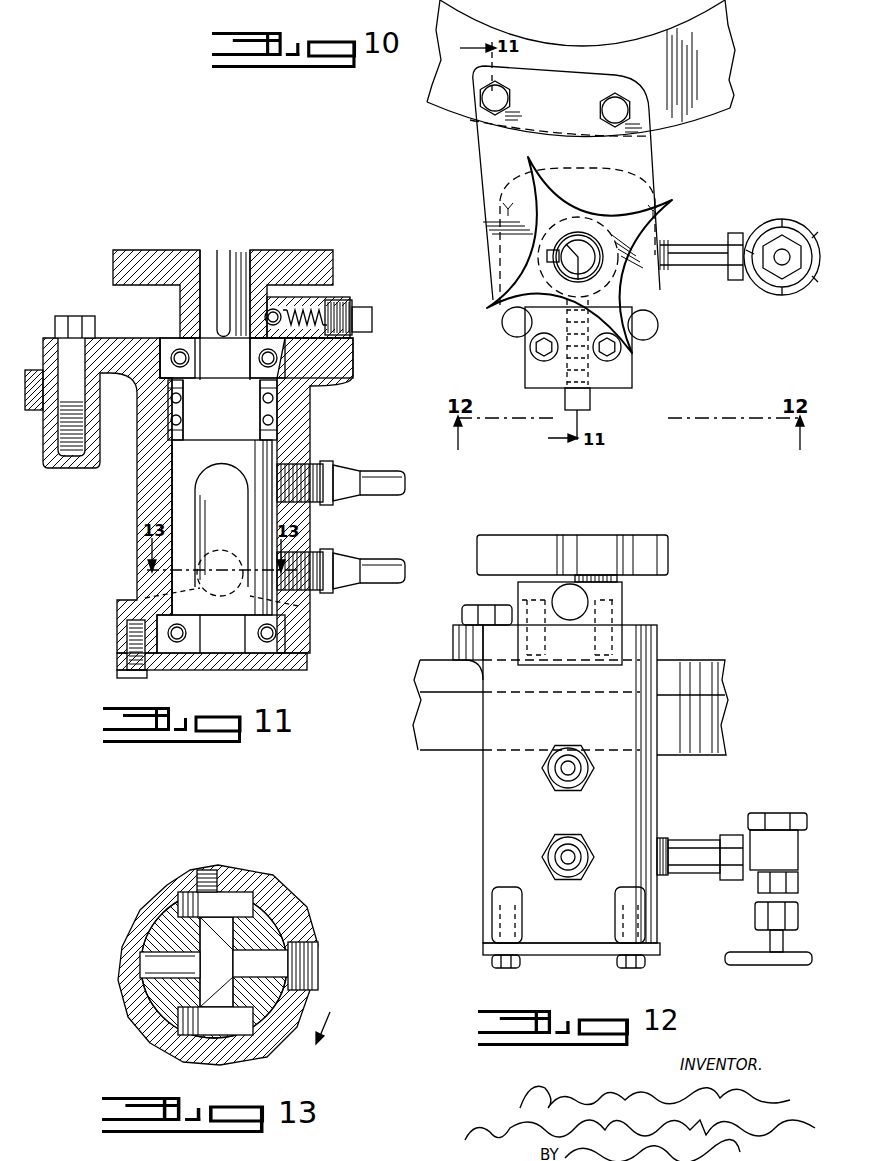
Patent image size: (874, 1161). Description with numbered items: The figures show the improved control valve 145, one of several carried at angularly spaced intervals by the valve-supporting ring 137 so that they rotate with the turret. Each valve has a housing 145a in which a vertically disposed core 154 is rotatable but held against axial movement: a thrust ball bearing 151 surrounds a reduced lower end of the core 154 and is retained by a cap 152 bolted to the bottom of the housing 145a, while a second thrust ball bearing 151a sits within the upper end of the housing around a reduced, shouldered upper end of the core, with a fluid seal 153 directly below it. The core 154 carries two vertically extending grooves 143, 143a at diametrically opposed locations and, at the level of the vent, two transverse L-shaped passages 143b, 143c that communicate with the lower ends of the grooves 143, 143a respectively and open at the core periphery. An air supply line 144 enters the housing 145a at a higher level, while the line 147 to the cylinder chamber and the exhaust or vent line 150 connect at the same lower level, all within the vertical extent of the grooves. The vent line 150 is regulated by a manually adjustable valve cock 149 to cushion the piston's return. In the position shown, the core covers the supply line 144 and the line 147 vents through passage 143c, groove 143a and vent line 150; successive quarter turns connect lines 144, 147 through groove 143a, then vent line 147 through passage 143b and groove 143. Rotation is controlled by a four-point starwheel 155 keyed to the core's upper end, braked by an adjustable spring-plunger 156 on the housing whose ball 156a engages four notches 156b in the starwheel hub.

In FIG. 10, the valve-supporting ring 137 is at (715, 103).
In FIG. 11, the valve-supporting ring 137 is at (35, 370).
In FIG. 12, the valve-supporting ring 137 is at (712, 660).
In FIG. 11, the groove 143 is at (237, 507).
In FIG. 13, the groove 143 is at (237, 1030).
In FIG. 13, the groove 143a is at (240, 902).
In FIG. 11, the L-shaped passage 143b is at (145, 598).
In FIG. 13, the L-shaped passage 143b is at (152, 963).
In FIG. 11, the L-shaped passage 143c is at (300, 606).
In FIG. 13, the L-shaped passage 143c is at (247, 942).
In FIG. 11, the air supply line 144 is at (380, 484).
In FIG. 12, the air supply line 144 is at (545, 768).
In FIG. 10, the valve 145 is at (470, 180).
In FIG. 11, the valve 145 is at (217, 497).
In FIG. 12, the valve 145 is at (573, 774).
In FIG. 10, the valve housing 145a is at (652, 168).
In FIG. 11, the valve housing 145a is at (312, 422).
In FIG. 12, the valve housing 145a is at (493, 803).
In FIG. 13, the valve housing 145a is at (160, 890).
In FIG. 11, the line 147 is at (380, 572).
In FIG. 12, the line 147 is at (545, 847).
In FIG. 13, the line 147 is at (303, 973).
In FIG. 10, the valve cock 149 is at (790, 290).
In FIG. 12, the valve cock 149 is at (767, 818).
In FIG. 10, the vent line 150 is at (685, 267).
In FIG. 11, the vent line 150 is at (185, 580).
In FIG. 12, the vent line 150 is at (682, 840).
In FIG. 13, the vent line 150 is at (207, 872).
In FIG. 11, the thrust ball bearing 151 is at (286, 638).
In FIG. 11, the thrust ball bearing 151a is at (168, 342).
In FIG. 11, the cap 152 is at (307, 660).
In FIG. 12, the cap 152 is at (563, 955).
In FIG. 11, the fluid seal 153 is at (278, 395).
In FIG. 11, the rotatable core 154 is at (175, 478).
In FIG. 13, the rotatable core 154 is at (150, 935).
In FIG. 10, the four-point starwheel 155 is at (492, 298).
In FIG. 11, the four-point starwheel 155 is at (163, 250).
In FIG. 12, the four-point starwheel 155 is at (668, 540).
In FIG. 10, the spring-plunger 156 is at (588, 400).
In FIG. 11, the spring-plunger 156 is at (346, 297).
In FIG. 12, the spring-plunger 156 is at (580, 603).
In FIG. 10, the ball 156a is at (557, 344).
In FIG. 11, the ball 156a is at (268, 298).
In FIG. 12, the ball 156a is at (570, 623).
In FIG. 10, the notch 156b is at (547, 256).
In FIG. 11, the notch 156b is at (270, 309).